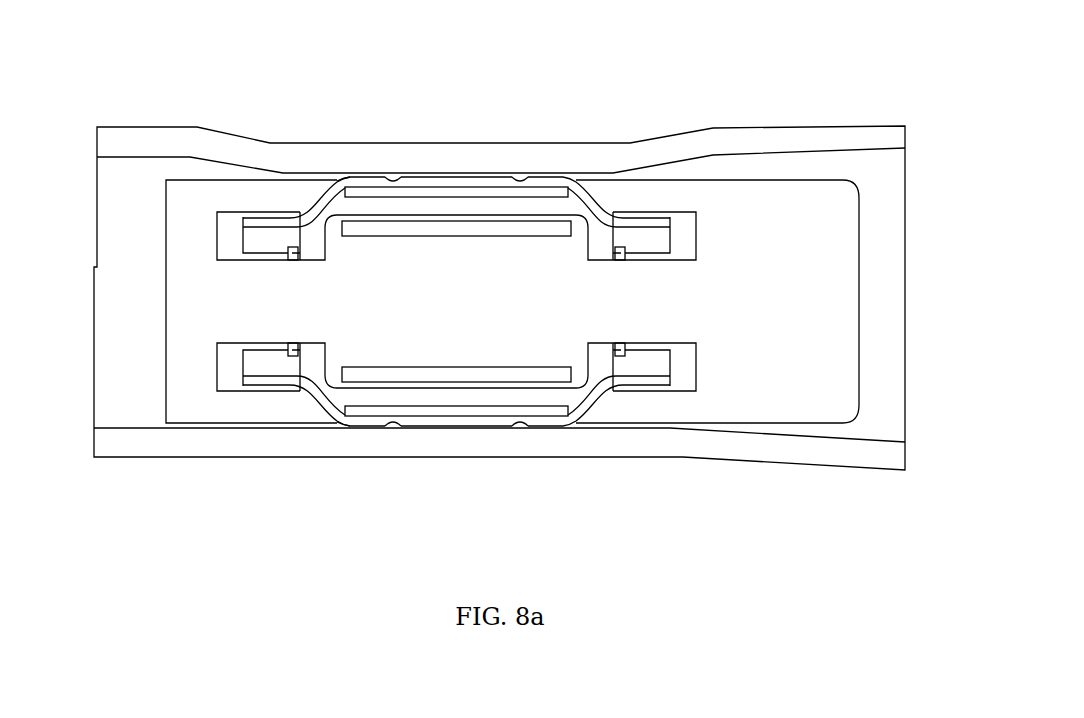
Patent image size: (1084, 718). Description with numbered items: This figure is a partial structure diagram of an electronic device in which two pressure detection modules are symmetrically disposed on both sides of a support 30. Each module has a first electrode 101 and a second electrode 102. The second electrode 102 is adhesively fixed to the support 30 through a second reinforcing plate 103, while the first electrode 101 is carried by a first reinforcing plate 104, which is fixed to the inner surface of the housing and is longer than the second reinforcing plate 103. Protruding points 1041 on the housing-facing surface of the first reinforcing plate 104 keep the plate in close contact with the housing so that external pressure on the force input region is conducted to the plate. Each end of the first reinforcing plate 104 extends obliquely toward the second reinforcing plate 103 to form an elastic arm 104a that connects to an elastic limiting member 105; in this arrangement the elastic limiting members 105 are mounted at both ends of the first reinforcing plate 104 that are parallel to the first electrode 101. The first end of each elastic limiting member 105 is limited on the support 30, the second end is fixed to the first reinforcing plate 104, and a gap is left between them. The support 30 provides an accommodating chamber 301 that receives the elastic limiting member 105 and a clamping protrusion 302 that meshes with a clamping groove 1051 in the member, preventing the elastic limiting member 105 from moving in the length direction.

The support 30 is at (620, 190).
The accommodating chamber 301 is at (677, 225).
The clamping protrusion 302 is at (300, 260).
The first electrode 101 is at (435, 192).
The second electrode 102 is at (464, 215).
The second reinforcing plate 103 is at (523, 228).
The first reinforcing plate 104 is at (420, 180).
The elastic arm 104a is at (323, 180).
The protruding point 1041 is at (388, 178).
The elastic limiting member 105 is at (262, 250).
The clamping groove 1051 is at (291, 262).